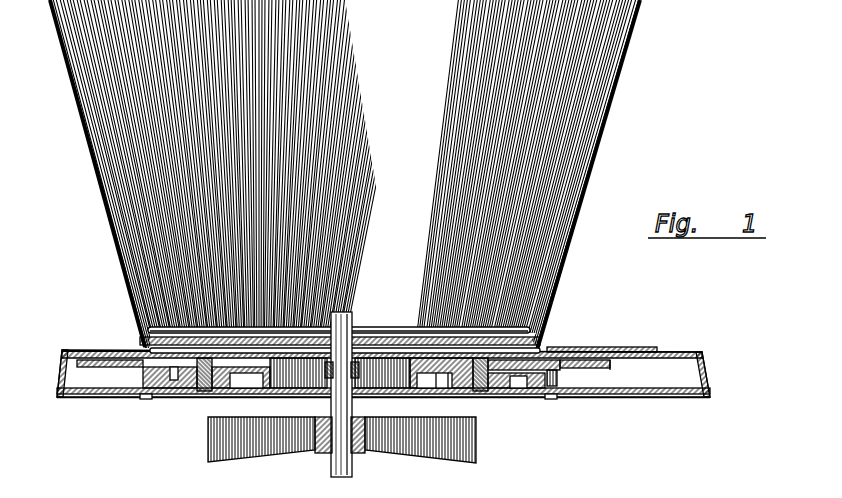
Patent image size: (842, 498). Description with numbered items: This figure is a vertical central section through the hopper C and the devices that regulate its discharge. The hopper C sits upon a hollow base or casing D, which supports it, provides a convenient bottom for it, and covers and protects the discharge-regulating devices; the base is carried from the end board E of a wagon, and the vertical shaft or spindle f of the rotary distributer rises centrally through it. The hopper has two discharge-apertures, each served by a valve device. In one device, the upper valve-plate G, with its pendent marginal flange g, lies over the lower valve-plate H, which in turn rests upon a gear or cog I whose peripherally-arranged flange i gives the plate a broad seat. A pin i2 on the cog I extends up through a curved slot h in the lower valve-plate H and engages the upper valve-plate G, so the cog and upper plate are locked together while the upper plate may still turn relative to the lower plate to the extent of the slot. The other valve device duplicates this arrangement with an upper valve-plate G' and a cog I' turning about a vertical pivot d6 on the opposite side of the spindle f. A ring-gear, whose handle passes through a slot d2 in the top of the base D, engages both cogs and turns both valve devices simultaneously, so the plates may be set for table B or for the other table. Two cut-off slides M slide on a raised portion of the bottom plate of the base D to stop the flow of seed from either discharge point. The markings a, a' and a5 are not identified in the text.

The hopper C is at (344, 182).
The base or casing D is at (84, 341).
The upper valve-plate G' is at (53, 373).
The lower valve-plate H is at (105, 366).
The cog I' is at (167, 402).
The vertical axis or pivot d6 is at (203, 391).
The peripherally-arranged flange i is at (248, 374).
The curved slot h is at (436, 374).
The gear or cog I is at (449, 394).
The cut-off slide M is at (300, 389).
The collar a5 is at (485, 391).
The pin i2 is at (530, 392).
The upper valve-plate G is at (575, 371).
The pendent marginal flange g is at (606, 368).
The slot d2 is at (637, 349).
The table B is at (565, 344).
The shaft rod a' is at (340, 303).
The vertical shaft or spindle f is at (330, 458).
The hub a is at (366, 343).
The end board E is at (342, 446).